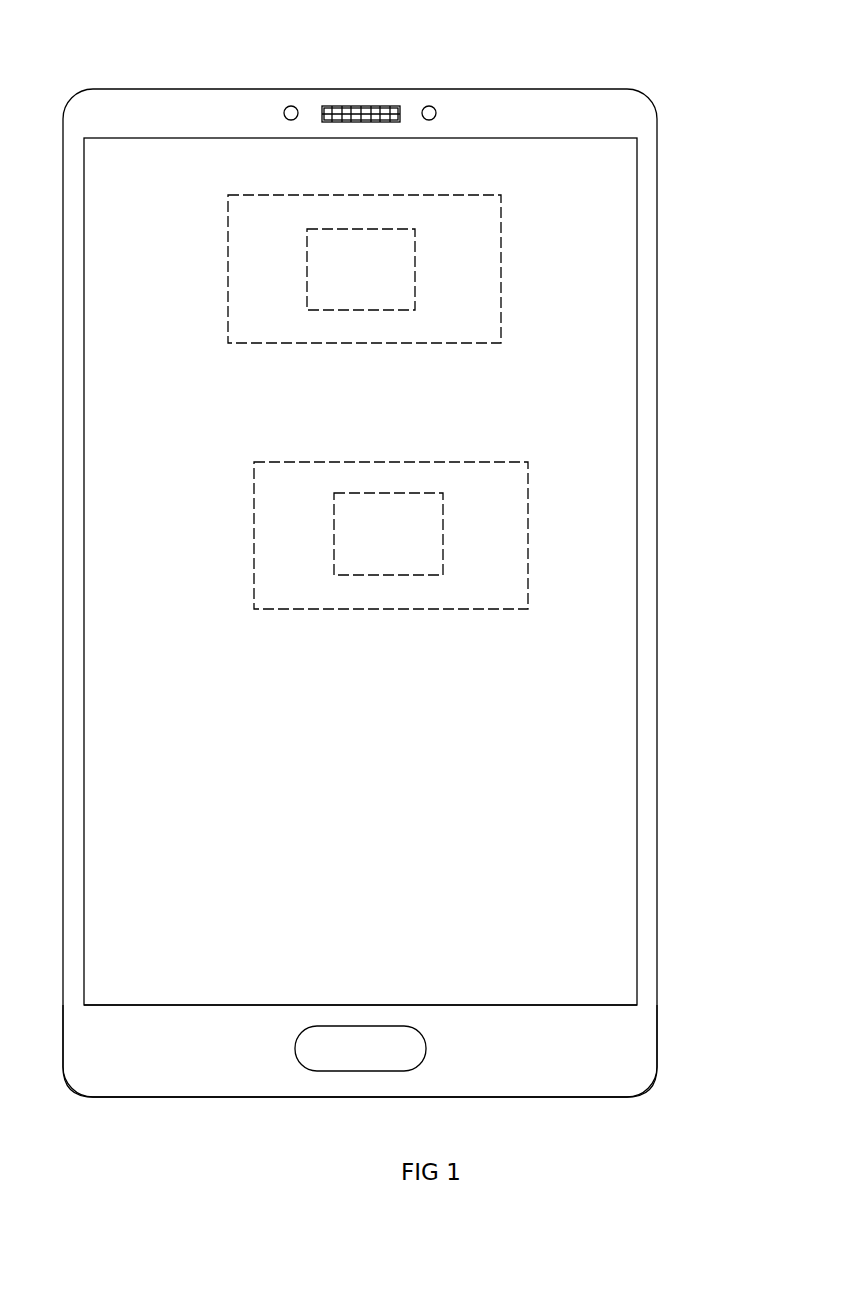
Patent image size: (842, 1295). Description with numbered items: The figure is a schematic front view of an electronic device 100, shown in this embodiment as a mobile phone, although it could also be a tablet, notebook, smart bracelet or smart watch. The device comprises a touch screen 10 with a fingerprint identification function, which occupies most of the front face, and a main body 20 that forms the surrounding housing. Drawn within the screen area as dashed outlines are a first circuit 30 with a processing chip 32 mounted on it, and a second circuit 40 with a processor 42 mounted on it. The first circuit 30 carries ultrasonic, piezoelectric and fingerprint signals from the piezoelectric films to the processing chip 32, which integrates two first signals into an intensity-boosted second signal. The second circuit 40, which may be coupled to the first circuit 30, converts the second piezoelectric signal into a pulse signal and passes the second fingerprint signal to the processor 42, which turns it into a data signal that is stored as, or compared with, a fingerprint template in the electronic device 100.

The electronic device 100 is at (336, 66).
The touch screen 10 is at (528, 773).
The main body 20 is at (556, 1039).
The first circuit 30 is at (453, 490).
The processing chip 32 is at (403, 544).
The second circuit 40 is at (454, 213).
The processor 42 is at (398, 276).